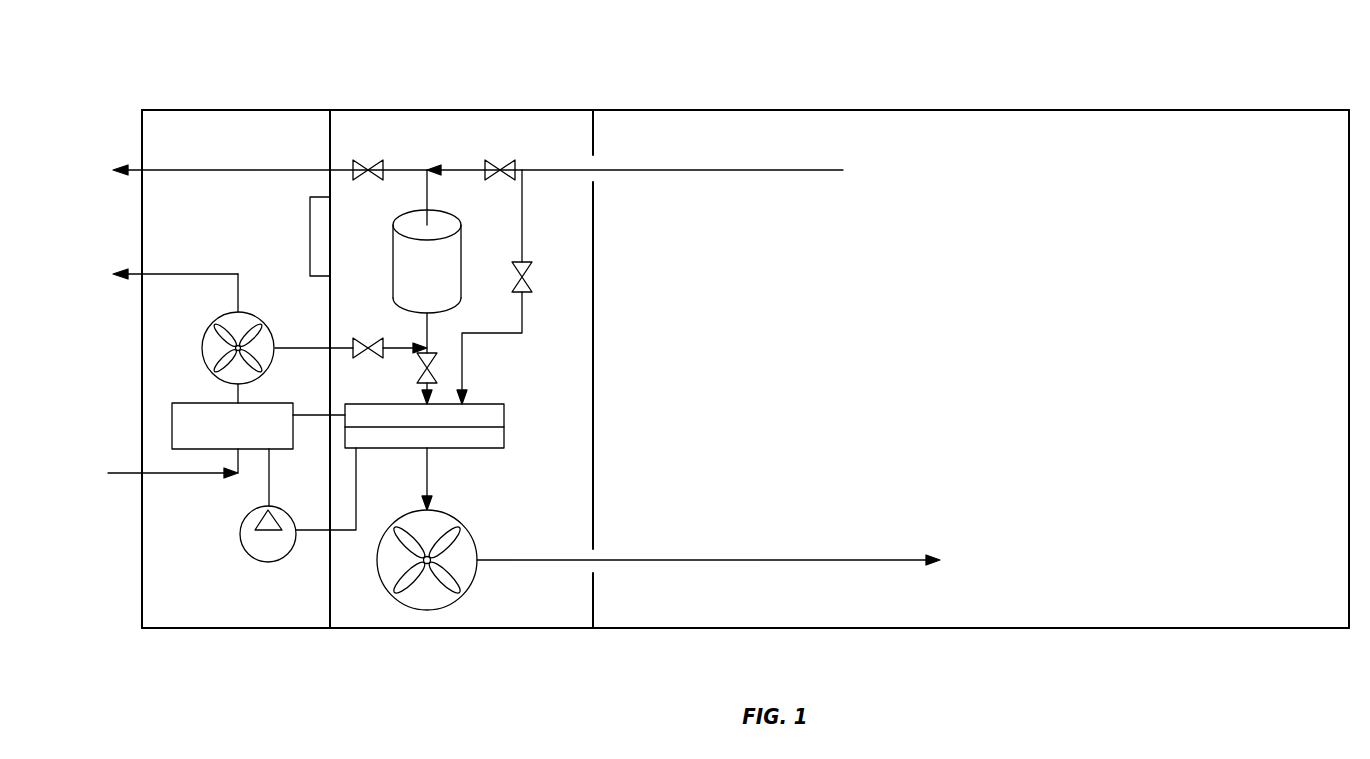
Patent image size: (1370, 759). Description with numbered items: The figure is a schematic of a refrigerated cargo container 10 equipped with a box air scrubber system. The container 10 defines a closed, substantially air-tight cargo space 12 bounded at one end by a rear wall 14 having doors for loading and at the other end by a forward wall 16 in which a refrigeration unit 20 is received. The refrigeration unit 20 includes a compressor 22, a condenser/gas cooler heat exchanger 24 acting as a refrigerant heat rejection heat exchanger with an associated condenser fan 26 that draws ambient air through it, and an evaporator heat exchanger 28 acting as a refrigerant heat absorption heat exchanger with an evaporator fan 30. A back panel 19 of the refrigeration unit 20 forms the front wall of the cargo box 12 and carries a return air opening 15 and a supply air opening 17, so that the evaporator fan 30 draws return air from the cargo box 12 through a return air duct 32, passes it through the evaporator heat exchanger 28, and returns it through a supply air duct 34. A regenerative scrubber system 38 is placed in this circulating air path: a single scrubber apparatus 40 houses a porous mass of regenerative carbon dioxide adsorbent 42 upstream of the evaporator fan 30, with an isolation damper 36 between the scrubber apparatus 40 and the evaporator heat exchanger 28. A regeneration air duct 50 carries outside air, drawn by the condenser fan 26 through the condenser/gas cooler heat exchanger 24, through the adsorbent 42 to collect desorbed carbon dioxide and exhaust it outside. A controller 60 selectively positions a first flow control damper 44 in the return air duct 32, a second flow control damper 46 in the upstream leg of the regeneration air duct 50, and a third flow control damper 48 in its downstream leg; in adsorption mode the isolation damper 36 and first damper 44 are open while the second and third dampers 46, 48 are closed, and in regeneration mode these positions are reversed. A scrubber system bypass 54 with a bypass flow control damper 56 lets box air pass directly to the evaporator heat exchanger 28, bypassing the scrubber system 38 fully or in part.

The refrigerated cargo container 10 is at (978, 66).
The cargo space 12 is at (998, 322).
The rear wall 14 is at (1349, 295).
The return air opening 15 is at (592, 163).
The forward wall 16 is at (142, 151).
The supply air opening 17 is at (594, 549).
The back panel 19 is at (593, 224).
The refrigeration unit 20 is at (298, 605).
The compressor 22 is at (252, 556).
The condenser/gas cooler heat exchanger 24 is at (192, 403).
The condenser fan 26 is at (212, 326).
The evaporator heat exchanger 28 is at (500, 404).
The evaporator fan 30 is at (462, 520).
The return air duct 32 is at (547, 172).
The supply air duct 34 is at (551, 562).
The isolation damper 36 is at (436, 364).
The regenerative scrubber system 38 is at (408, 199).
The scrubber apparatus 40 is at (463, 259).
The regenerative carbon dioxide adsorbent 42 is at (450, 278).
The first flow control damper 44 is at (506, 158).
The second flow control damper 46 is at (372, 336).
The third flow control damper 48 is at (374, 158).
The regeneration air duct 50 is at (342, 168).
The scrubber system bypass 54 is at (522, 335).
The bypass flow control damper 56 is at (530, 290).
The controller 60 is at (310, 237).